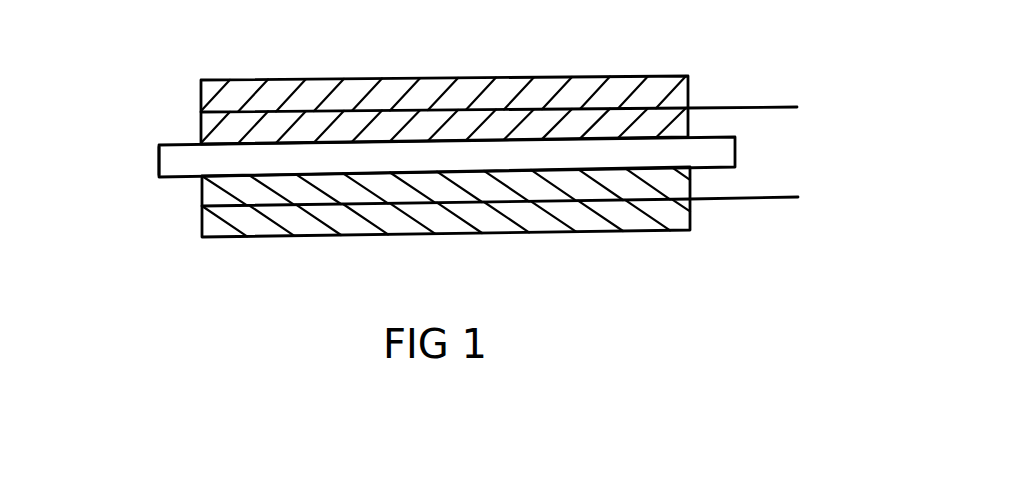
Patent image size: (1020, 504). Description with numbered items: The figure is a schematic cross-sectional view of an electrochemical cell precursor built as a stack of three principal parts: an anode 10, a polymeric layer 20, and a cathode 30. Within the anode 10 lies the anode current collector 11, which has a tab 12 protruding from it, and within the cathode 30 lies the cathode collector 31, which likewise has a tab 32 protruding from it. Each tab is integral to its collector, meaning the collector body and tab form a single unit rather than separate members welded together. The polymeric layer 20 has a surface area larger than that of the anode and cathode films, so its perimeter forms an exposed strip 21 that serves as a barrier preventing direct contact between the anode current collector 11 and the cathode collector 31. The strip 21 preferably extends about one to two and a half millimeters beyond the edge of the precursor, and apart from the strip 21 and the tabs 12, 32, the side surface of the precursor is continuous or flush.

The anode 10 is at (127, 140).
The anode current collector 11 is at (562, 108).
The tab 12 is at (737, 104).
The polymeric layer 20 is at (443, 153).
The strip 21 is at (173, 158).
The cathode 30 is at (127, 182).
The cathode collector 31 is at (475, 199).
The tab 32 is at (755, 197).